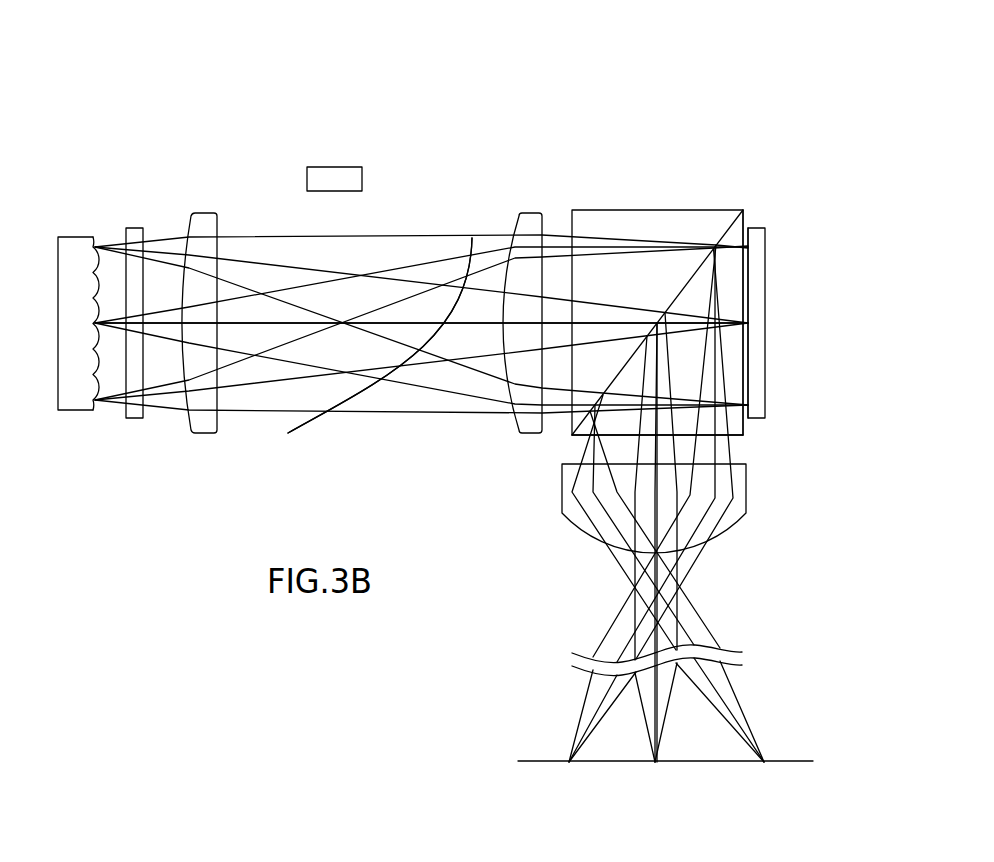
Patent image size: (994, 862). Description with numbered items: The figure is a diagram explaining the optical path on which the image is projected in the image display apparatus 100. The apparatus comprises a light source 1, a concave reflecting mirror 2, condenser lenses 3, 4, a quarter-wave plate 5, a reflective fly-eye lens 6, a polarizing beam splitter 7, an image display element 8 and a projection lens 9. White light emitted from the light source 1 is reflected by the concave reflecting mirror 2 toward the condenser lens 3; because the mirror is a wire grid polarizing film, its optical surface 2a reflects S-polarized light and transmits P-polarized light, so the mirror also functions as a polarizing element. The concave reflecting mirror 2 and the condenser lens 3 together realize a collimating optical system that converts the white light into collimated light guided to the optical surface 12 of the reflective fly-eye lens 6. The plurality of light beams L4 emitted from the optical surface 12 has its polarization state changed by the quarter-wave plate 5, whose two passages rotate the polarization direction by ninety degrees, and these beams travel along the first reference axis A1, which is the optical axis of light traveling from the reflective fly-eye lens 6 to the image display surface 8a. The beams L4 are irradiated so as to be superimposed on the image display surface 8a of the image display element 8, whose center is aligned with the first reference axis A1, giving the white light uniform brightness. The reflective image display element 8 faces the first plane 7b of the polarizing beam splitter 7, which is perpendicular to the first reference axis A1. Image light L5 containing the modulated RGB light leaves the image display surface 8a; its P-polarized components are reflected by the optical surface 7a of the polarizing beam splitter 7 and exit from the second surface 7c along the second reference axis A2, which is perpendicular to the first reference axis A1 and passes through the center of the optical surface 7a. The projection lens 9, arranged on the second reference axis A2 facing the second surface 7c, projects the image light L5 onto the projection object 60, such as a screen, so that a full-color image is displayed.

The image display apparatus 100 is at (431, 134).
The light source 1 is at (337, 167).
The reflective fly-eye lens 6 is at (75, 237).
The optical surface of the reflective fly-eye lens 12 is at (100, 242).
The quarter-wave plate 5 is at (140, 228).
The condenser lens 3 is at (205, 213).
The plurality of light beams L4 is at (273, 237).
The first reference axis A1 is at (358, 318).
The concave reflecting mirror 2 is at (472, 230).
The optical surface of the concave reflecting mirror 2a is at (470, 250).
The condenser lens 4 is at (530, 213).
The polarizing beam splitter 7 is at (663, 209).
The optical surface of the PBS 7a is at (700, 245).
The first plane of the PBS 7b is at (746, 388).
The second surface of the PBS 7c is at (720, 437).
The image display element 8 is at (760, 228).
The image display surface 8a is at (747, 286).
The second reference axis A2 is at (657, 448).
The projection lens 9 is at (605, 548).
The image light L5 is at (700, 613).
The projection object 60 is at (789, 761).